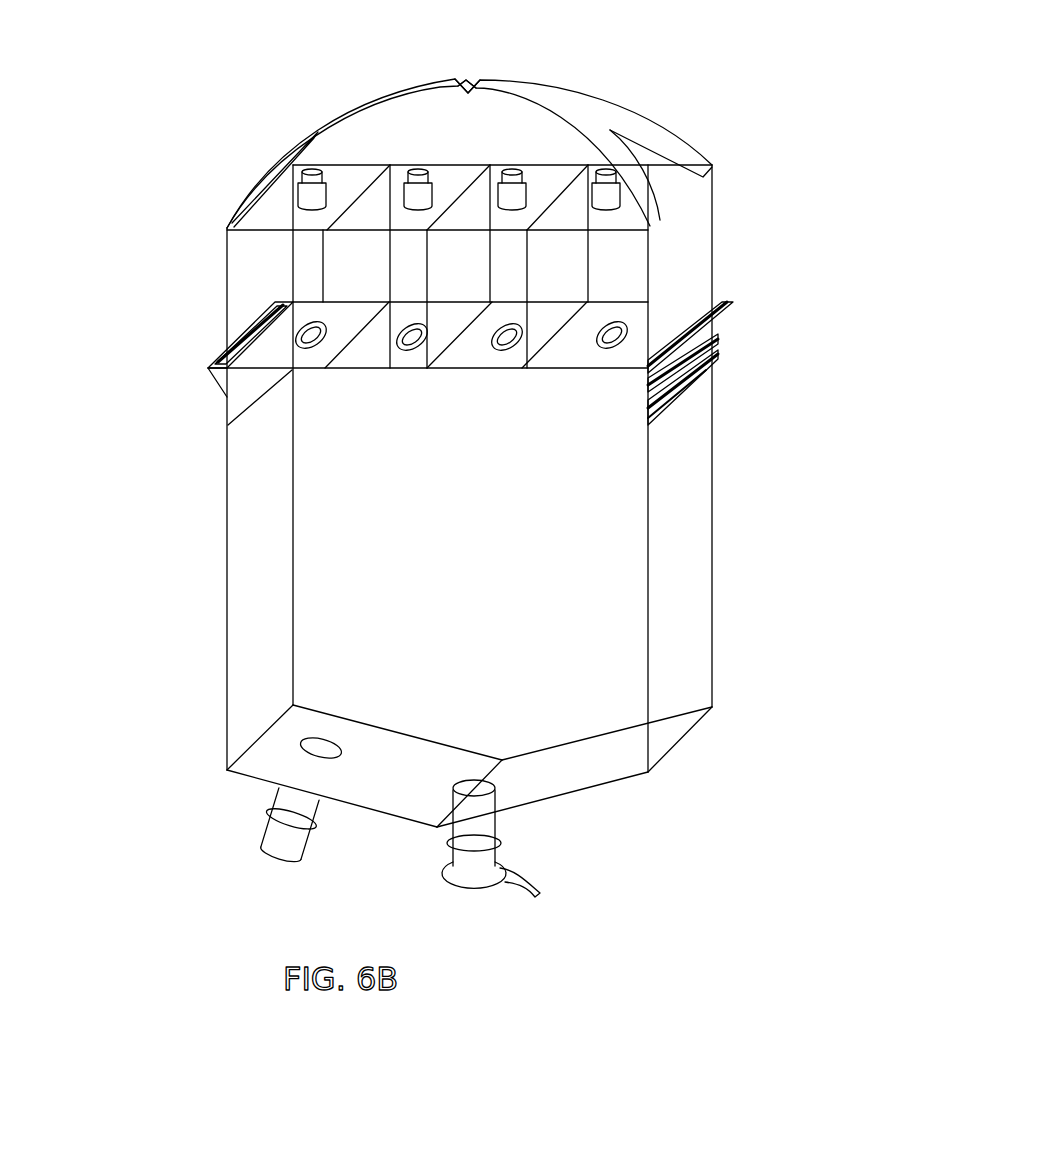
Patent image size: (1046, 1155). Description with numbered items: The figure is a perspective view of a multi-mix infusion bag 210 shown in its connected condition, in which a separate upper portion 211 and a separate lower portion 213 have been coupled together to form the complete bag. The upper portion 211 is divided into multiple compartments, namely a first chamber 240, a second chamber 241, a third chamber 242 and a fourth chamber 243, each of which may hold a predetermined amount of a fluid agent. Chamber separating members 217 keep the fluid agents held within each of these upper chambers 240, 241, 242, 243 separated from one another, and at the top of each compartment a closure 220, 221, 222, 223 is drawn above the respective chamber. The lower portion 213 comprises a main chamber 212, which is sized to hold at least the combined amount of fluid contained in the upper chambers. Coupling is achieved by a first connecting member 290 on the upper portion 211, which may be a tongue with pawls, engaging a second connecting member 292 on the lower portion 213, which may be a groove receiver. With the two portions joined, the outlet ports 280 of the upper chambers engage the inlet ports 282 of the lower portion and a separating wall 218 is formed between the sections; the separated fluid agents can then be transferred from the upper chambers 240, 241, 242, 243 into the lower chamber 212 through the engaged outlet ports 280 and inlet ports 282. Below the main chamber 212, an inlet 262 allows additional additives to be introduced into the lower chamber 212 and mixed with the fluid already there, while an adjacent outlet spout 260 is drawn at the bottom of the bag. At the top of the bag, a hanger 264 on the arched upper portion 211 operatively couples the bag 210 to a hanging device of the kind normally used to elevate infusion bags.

The multi-mix infusion bag 210 is at (468, 466).
The upper portion 211 is at (180, 227).
The main chamber 212 is at (570, 520).
The lower portion 213 is at (185, 552).
The chamber separating members 217 is at (560, 268).
The separating wall 218 is at (277, 357).
The cap 220 is at (318, 173).
The cap 221 is at (418, 172).
The cap 222 is at (512, 173).
The cap 223 is at (606, 172).
The first chamber 240 is at (268, 285).
The second chamber 241 is at (373, 332).
The third chamber 242 is at (483, 328).
The fourth chamber 243 is at (578, 329).
The outlet spout 260 is at (488, 832).
The inlet 262 is at (278, 837).
The hanger 264 is at (478, 80).
The outlet port 280 is at (605, 352).
The inlet port 282 is at (613, 350).
The first connecting member 290 is at (687, 372).
The second connecting member 292 is at (730, 303).